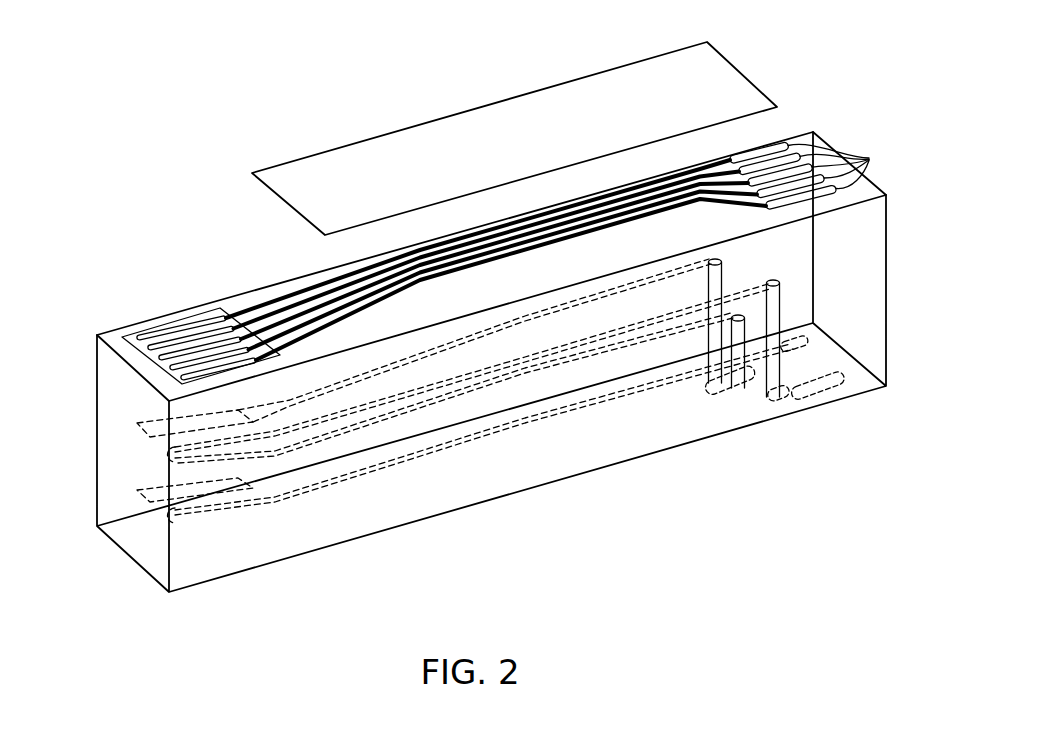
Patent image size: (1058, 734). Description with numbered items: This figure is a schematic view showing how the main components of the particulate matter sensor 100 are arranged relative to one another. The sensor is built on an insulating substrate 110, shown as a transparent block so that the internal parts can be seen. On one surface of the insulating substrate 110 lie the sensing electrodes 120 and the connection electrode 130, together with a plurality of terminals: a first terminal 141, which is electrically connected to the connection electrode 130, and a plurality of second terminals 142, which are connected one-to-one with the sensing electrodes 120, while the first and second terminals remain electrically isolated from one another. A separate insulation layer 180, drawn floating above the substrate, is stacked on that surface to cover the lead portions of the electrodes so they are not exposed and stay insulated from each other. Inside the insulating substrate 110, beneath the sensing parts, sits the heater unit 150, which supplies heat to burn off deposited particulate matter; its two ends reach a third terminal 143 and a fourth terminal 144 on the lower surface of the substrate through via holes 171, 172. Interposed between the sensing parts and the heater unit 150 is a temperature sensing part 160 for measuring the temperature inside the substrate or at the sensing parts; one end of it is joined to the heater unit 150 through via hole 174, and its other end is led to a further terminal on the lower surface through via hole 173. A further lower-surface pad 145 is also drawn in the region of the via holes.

The particulate matter sensor 100 is at (220, 96).
The insulating substrate 110 is at (136, 553).
The sensing electrodes 120 is at (248, 300).
The connection electrode 130 is at (142, 369).
The first terminal 141 is at (786, 142).
The second terminals 142 is at (866, 160).
The third terminal 143 is at (788, 340).
The fourth terminal 144 is at (835, 387).
The internal connection pad 145 is at (740, 385).
The heater unit 150 is at (126, 501).
The temperature sensing part 160 is at (126, 438).
The via hole 171 is at (784, 375).
The via hole 172 is at (751, 334).
The via hole 173 is at (715, 340).
The via hole 174 is at (778, 306).
The insulation layer 180 is at (522, 120).